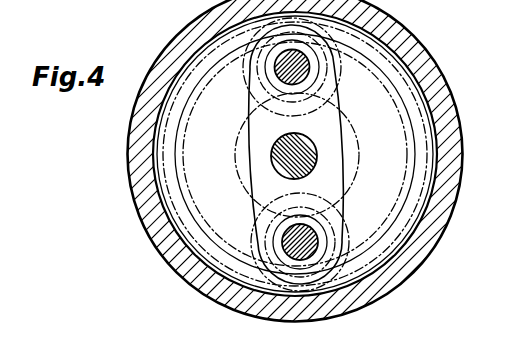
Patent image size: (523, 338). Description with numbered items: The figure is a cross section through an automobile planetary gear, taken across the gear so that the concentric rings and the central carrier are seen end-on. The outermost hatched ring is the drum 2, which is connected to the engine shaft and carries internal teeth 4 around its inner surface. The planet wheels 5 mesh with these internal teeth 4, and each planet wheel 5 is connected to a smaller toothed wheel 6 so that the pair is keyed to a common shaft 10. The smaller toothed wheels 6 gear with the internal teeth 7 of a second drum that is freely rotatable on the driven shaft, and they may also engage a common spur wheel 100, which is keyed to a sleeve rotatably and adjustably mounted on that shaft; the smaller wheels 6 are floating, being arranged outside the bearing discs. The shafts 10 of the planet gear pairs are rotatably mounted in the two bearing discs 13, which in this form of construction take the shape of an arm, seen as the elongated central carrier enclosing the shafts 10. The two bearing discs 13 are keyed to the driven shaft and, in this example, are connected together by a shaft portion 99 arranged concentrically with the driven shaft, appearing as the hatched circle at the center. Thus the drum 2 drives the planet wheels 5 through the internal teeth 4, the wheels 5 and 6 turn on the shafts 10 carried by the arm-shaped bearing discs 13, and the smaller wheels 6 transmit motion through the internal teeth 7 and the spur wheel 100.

The drum 2 is at (405, 42).
The internal teeth 4 is at (434, 157).
The planet wheels 5 is at (336, 78).
The smaller toothed wheels 6 is at (284, 82).
The internal teeth 7 is at (406, 198).
The shafts 10 is at (276, 74).
The bearing discs 13 is at (263, 178).
The shaft portion 99 is at (308, 156).
The common spur wheel 100 is at (357, 170).